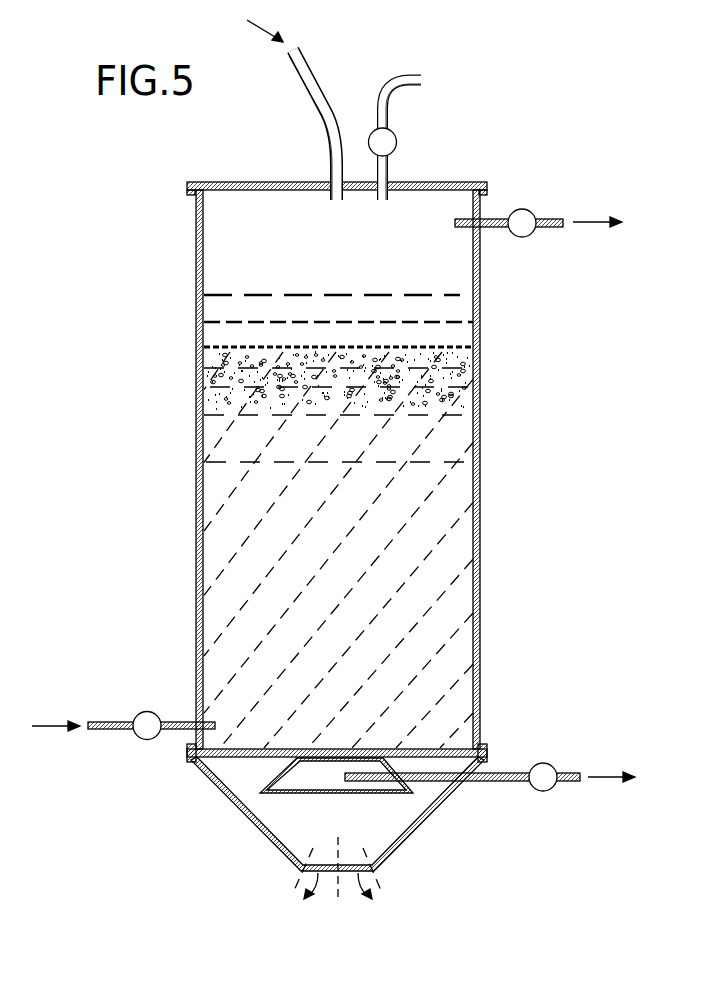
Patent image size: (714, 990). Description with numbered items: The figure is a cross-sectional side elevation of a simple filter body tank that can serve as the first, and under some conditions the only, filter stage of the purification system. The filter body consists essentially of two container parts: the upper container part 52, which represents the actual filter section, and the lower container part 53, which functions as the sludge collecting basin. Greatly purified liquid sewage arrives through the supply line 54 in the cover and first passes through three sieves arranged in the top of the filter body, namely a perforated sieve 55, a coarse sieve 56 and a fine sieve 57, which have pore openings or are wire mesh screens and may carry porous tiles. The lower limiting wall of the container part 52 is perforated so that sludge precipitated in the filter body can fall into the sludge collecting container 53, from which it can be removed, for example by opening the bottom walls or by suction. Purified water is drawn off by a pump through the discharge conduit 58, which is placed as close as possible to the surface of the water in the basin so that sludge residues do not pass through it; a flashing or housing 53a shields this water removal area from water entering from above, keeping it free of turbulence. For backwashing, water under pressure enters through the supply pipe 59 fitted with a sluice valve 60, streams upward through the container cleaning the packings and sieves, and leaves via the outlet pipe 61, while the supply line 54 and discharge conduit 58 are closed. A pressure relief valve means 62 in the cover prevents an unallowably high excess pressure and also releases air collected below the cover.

The container part 52 is at (481, 557).
The container part 53 is at (410, 830).
The flashing or housing 53a is at (280, 770).
The supply line 54 is at (330, 118).
The perforated sieve 55 is at (458, 296).
The coarse sieve 56 is at (450, 322).
The fine sieve 57 is at (447, 346).
The discharge conduit 58 is at (490, 783).
The supply pipe 59 is at (112, 720).
The sluice valve 60 is at (153, 740).
The outlet pipe 61 is at (547, 218).
The pressure relief valve means 62 is at (397, 141).